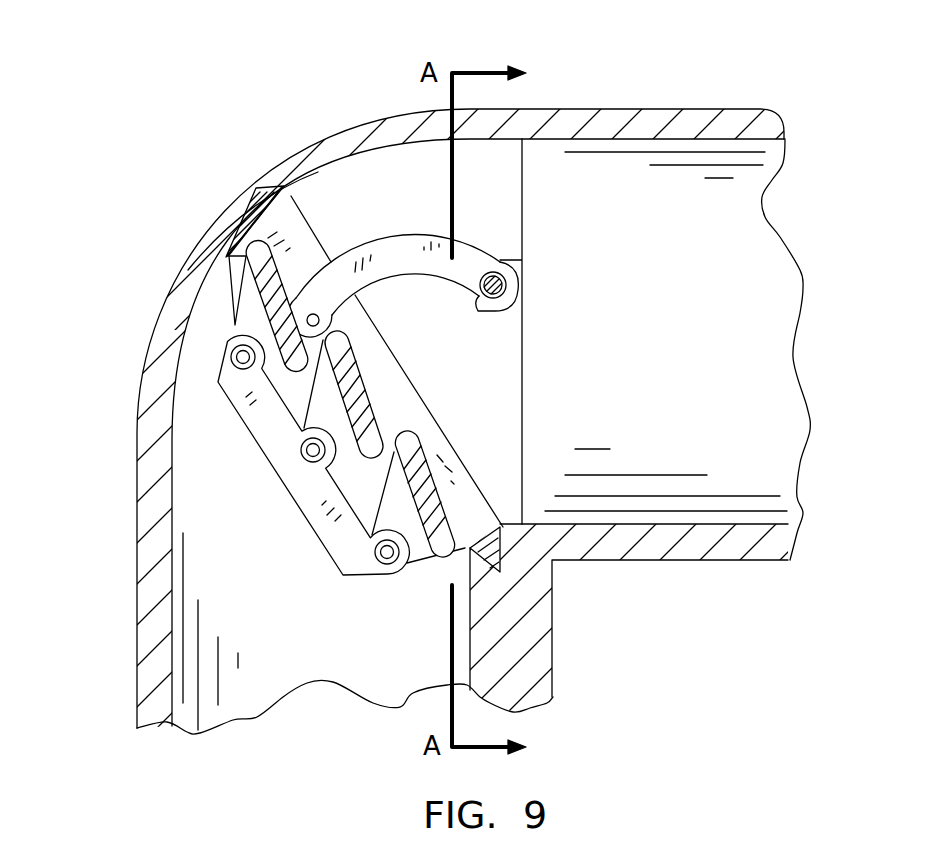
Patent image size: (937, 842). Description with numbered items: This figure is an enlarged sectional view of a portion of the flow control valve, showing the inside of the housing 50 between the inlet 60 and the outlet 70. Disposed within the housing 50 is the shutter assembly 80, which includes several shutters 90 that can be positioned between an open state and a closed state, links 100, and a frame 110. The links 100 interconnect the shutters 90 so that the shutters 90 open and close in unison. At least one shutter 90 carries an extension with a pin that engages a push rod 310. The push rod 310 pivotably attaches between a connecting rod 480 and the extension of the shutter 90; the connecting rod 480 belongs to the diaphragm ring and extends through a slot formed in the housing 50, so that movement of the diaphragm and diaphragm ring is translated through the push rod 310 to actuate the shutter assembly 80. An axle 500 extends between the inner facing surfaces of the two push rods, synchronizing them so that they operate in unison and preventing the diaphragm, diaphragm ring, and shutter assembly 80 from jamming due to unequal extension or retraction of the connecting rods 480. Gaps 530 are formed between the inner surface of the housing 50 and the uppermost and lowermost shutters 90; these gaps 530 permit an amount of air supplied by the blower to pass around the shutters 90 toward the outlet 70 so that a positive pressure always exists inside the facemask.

The housing 50 is at (618, 107).
The inlet 60 is at (305, 636).
The outlet 70 is at (723, 346).
The shutter assembly 80 is at (297, 240).
The shutters 90 is at (257, 323).
The links 100 is at (280, 462).
The frame 110 is at (260, 203).
The push rod 310 is at (470, 245).
The connecting rod 480 is at (513, 302).
The axle 500 is at (507, 275).
The gaps 530 is at (235, 267).